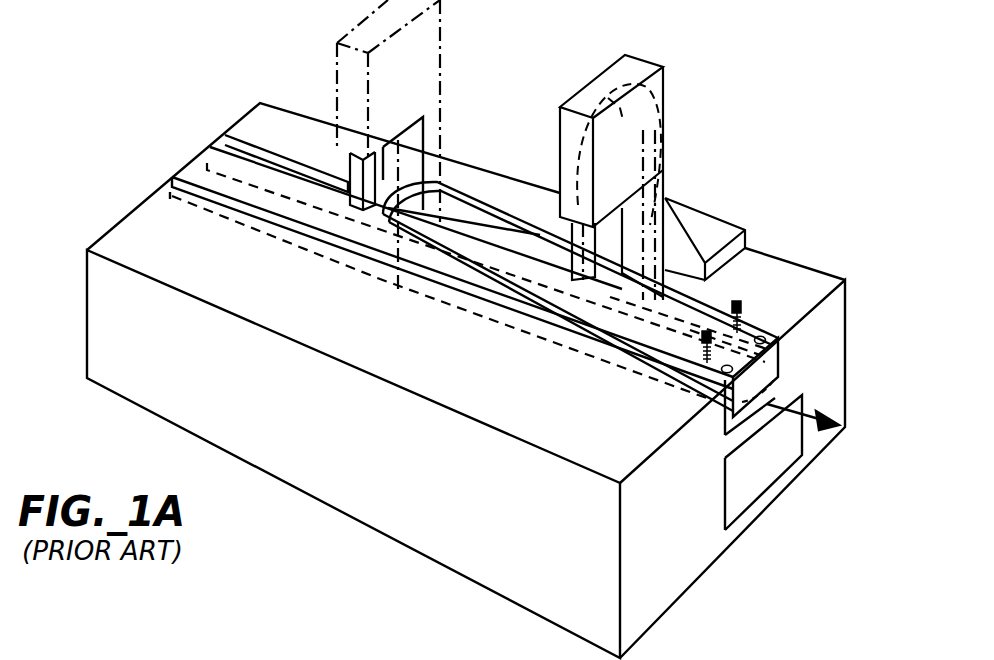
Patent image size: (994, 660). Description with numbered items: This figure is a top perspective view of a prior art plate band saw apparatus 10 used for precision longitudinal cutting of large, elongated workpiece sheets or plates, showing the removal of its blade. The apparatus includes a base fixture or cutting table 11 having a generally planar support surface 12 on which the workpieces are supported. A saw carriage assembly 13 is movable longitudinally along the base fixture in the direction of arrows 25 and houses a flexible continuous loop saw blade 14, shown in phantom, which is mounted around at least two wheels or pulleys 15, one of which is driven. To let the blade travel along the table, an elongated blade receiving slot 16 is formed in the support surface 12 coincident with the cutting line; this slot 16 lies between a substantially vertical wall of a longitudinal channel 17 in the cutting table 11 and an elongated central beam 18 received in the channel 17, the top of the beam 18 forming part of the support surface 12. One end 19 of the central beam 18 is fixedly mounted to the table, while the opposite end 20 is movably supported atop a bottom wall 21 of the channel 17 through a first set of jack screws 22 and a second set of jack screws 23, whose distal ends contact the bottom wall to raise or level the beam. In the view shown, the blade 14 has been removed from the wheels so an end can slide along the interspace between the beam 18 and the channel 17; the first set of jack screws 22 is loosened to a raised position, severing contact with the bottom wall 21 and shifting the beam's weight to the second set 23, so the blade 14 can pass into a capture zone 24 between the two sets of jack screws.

The plate band saw apparatus 10 is at (113, 72).
The cutting table 11 is at (132, 205).
The support surface 12 is at (108, 228).
The saw carriage assembly 13 is at (433, 66).
The continuous loop saw blade 14 is at (460, 182).
The wheels or pulleys 15 is at (607, 96).
The blade receiving slot 16 is at (195, 192).
The longitudinal channel 17 is at (223, 133).
The central beam 18 is at (288, 176).
The end of central beam 19 is at (188, 186).
The opposite end of central beam 20 is at (772, 356).
The bottom wall 21 is at (778, 370).
The first set of jack screws 22 is at (709, 333).
The second set of jack screws 23 is at (762, 337).
The capture zone 24 is at (687, 352).
The arrows 25 is at (773, 400).